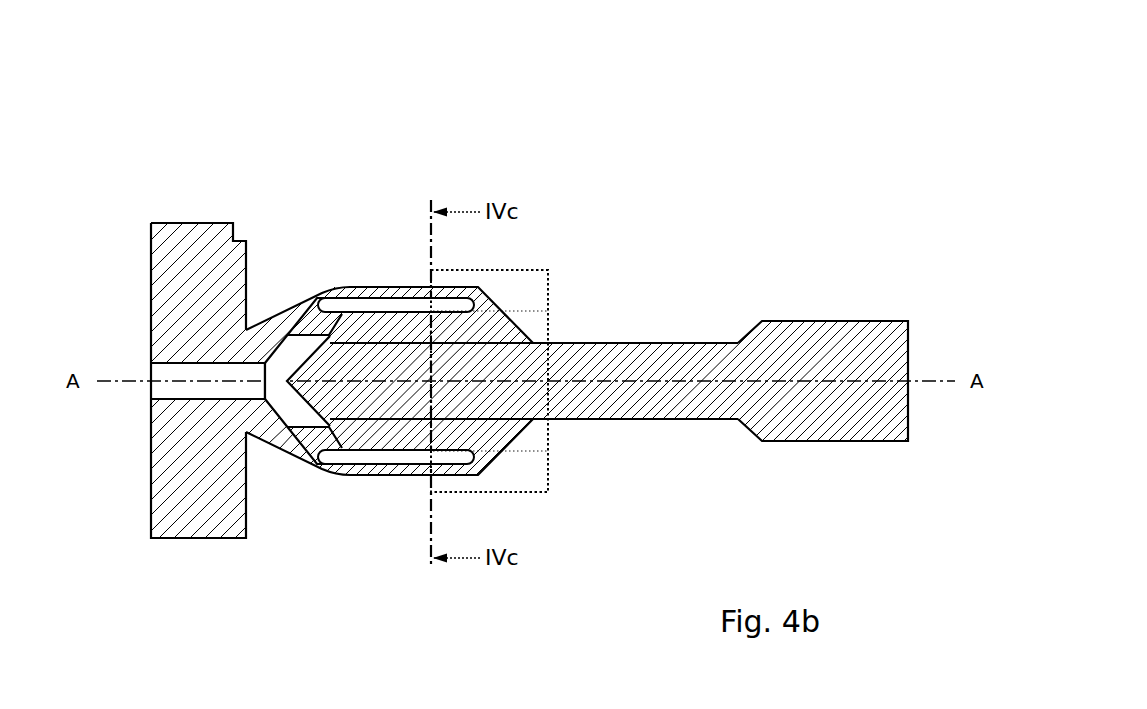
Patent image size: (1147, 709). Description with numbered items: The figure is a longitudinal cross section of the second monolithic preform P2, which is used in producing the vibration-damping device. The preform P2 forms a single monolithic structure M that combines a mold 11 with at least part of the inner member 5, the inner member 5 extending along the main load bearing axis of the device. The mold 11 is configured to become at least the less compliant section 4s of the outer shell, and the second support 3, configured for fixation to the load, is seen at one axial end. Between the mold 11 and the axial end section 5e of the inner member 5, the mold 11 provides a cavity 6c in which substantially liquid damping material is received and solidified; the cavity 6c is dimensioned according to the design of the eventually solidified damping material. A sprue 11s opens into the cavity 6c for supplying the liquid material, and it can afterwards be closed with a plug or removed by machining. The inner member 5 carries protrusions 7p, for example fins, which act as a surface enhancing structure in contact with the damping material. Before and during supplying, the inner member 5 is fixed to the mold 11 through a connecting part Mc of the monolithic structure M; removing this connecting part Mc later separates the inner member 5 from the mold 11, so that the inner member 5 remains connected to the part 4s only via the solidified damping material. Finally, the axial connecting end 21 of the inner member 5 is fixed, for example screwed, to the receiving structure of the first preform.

The second support 3 is at (198, 246).
The mold 11 is at (338, 232).
The sprue 11s is at (136, 372).
The inner member 5 is at (640, 400).
The axial end section 5e is at (352, 362).
The cavity 6c is at (290, 402).
The less compliant section 4s is at (303, 442).
The protrusions 7p is at (383, 330).
The axial connecting end 21 is at (845, 346).
The connecting part Mc is at (548, 307).
The monolithic structure M is at (702, 244).
The second monolithic preform P2 is at (657, 144).